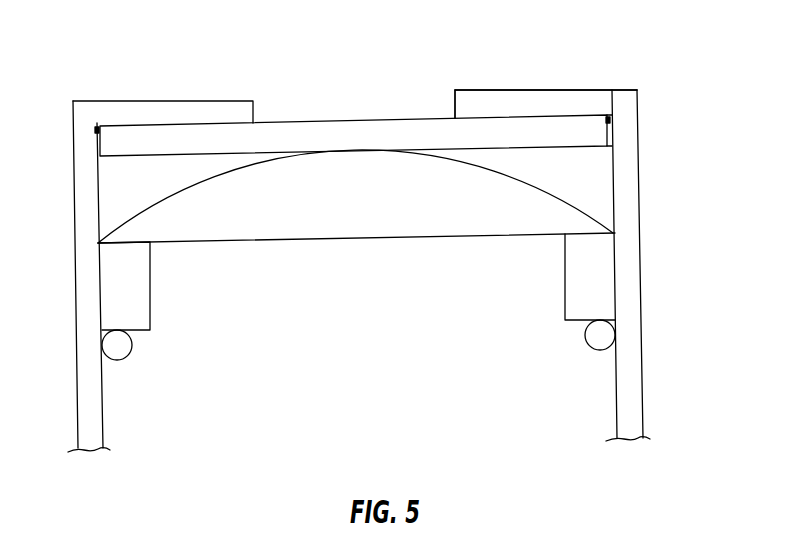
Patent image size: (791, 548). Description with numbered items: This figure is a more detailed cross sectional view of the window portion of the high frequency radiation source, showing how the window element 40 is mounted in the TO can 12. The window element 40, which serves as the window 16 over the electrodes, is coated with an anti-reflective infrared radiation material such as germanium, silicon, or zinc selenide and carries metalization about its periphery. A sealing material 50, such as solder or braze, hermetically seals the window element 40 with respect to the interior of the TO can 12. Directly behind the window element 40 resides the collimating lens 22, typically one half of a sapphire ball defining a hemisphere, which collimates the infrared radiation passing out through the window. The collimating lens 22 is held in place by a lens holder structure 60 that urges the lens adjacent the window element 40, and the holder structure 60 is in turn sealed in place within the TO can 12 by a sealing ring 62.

The TO can 12 is at (632, 307).
The window 16 is at (362, 100).
The collimating lens 22 is at (517, 203).
The window element 40 is at (512, 130).
The sealing material 50 is at (97, 130).
The lens holder structure 60 is at (120, 283).
The sealing ring 62 is at (122, 352).